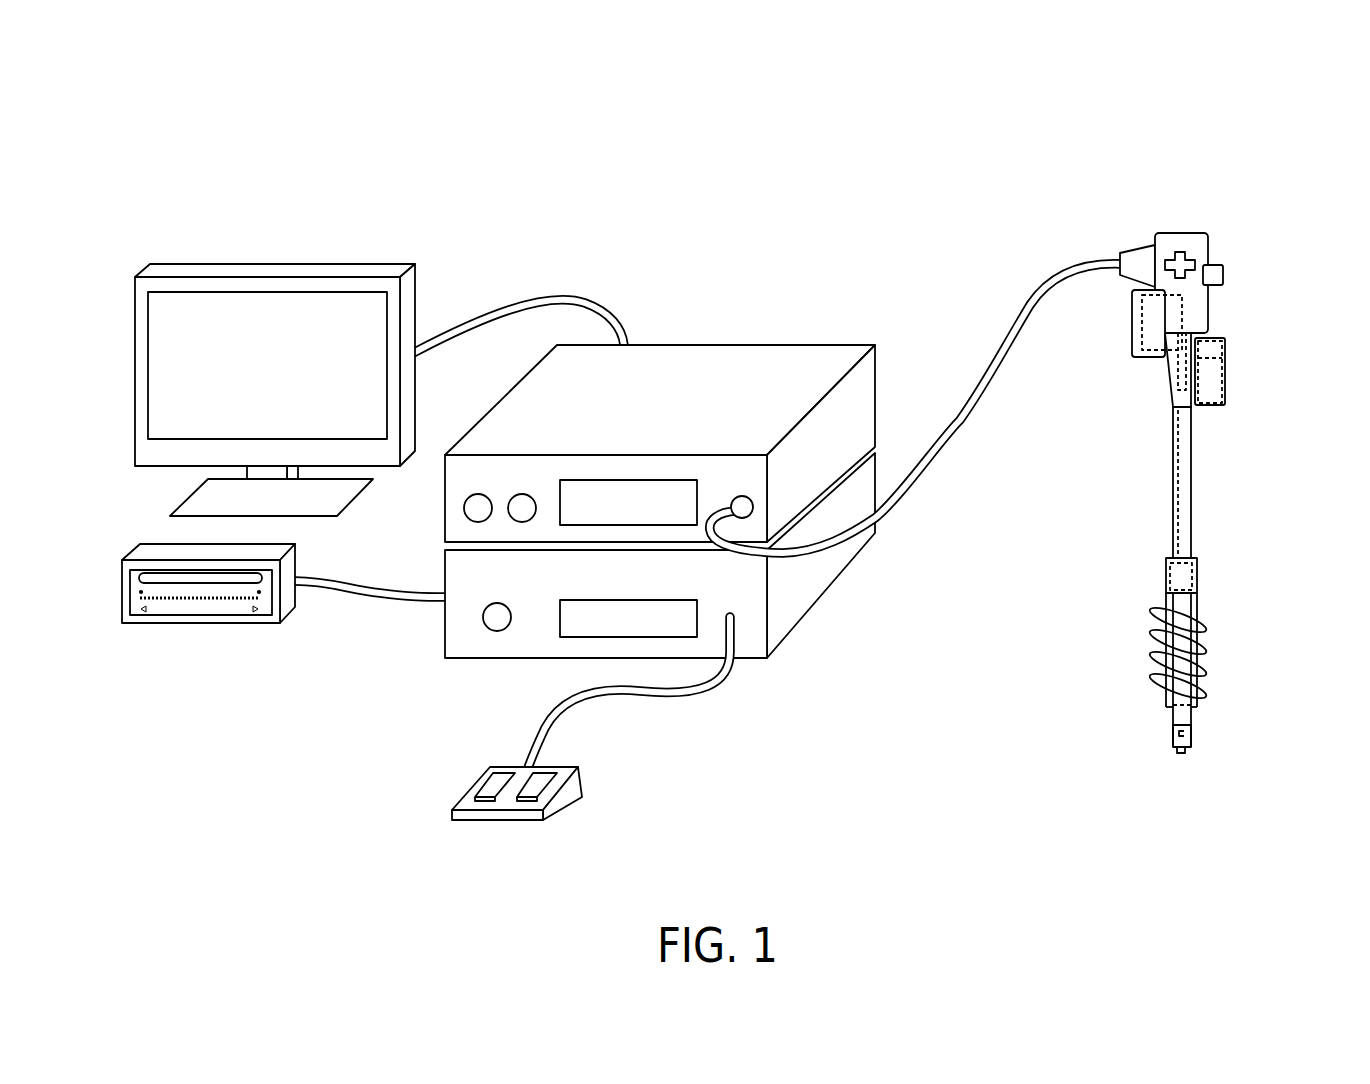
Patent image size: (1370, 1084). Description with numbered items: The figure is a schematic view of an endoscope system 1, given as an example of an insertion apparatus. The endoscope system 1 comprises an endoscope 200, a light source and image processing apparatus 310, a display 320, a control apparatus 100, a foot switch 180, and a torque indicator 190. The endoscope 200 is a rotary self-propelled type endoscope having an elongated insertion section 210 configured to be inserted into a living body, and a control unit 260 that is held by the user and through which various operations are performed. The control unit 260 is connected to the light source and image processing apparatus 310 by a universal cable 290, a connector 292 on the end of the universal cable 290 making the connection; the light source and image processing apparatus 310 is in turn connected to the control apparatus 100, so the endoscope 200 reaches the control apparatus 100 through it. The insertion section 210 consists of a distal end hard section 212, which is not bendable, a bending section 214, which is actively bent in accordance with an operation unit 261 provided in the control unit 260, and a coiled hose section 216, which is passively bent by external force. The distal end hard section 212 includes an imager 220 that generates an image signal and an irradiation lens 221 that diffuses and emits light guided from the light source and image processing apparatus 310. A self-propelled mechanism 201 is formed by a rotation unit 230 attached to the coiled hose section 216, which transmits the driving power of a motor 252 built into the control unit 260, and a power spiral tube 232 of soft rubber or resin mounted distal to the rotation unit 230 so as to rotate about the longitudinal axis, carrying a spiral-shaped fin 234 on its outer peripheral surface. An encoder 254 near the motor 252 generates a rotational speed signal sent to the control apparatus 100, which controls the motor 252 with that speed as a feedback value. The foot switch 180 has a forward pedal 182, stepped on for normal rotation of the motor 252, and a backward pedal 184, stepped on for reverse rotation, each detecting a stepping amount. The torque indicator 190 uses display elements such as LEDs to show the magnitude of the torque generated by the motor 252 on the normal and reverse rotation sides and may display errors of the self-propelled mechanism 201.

The endoscope system 1 is at (719, 458).
The control apparatus 100 is at (818, 584).
The foot switch 180 is at (539, 821).
The forward pedal 182 is at (480, 800).
The backward pedal 184 is at (523, 802).
The torque indicator 190 is at (285, 605).
The endoscope 200 is at (1162, 483).
The self-propelled mechanism 201 is at (1159, 699).
The insertion section 210 is at (1159, 612).
The distal end hard section 212 is at (1168, 740).
The bending section 214 is at (1168, 713).
The coiled hose section 216 is at (1171, 485).
The imager 220 is at (1182, 733).
The irradiation lens 221 is at (1182, 756).
The rotation unit 230 is at (1167, 567).
The power spiral tube 232 is at (1160, 631).
The spiral-shaped fin 234 is at (1160, 609).
The motor 252 is at (1190, 395).
The encoder 254 is at (1228, 347).
The control unit 260 is at (1154, 252).
The operation unit 261 is at (1168, 265).
The universal cable 290 is at (1033, 260).
The connector 292 is at (741, 496).
The light source and image processing apparatus 310 is at (830, 355).
The display 320 is at (355, 273).